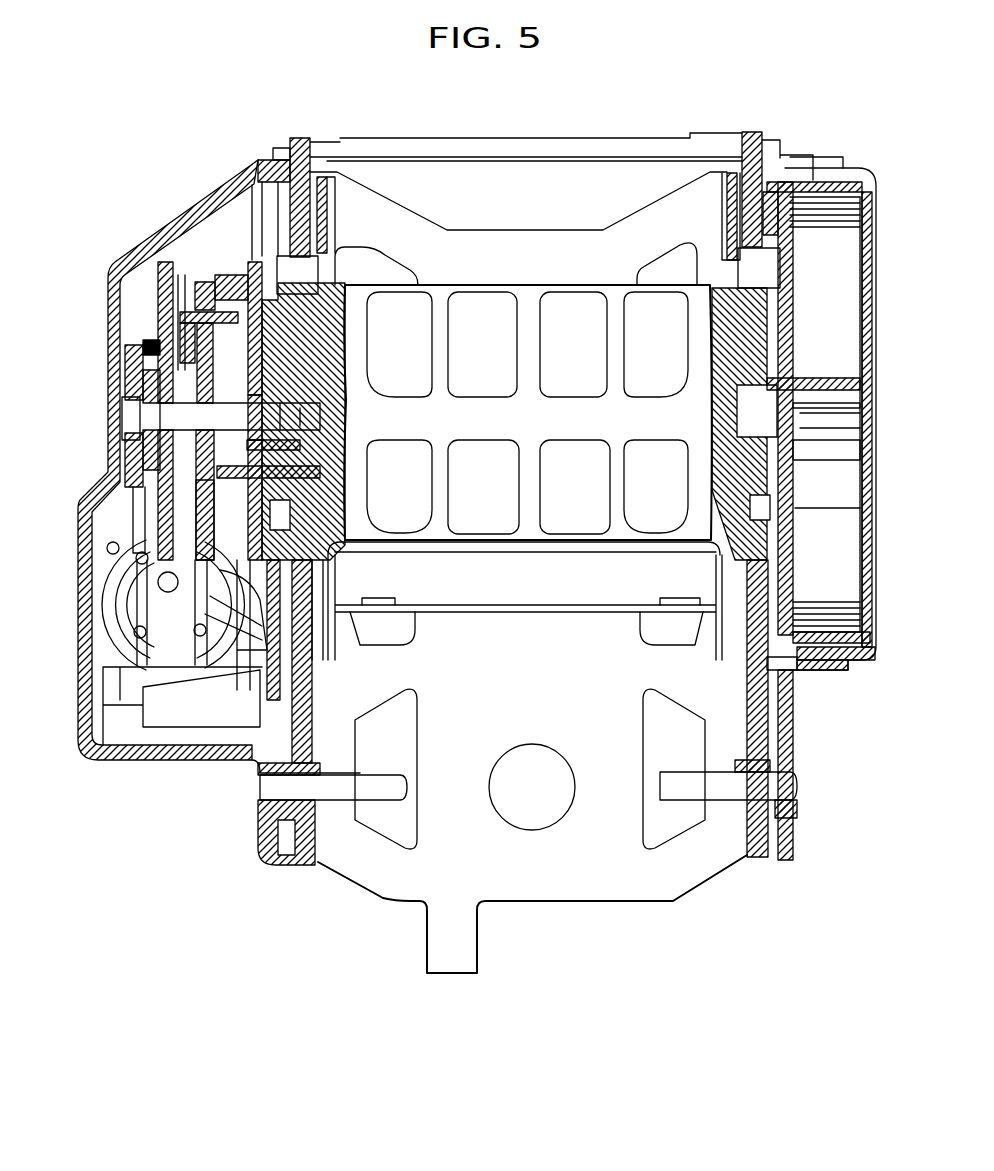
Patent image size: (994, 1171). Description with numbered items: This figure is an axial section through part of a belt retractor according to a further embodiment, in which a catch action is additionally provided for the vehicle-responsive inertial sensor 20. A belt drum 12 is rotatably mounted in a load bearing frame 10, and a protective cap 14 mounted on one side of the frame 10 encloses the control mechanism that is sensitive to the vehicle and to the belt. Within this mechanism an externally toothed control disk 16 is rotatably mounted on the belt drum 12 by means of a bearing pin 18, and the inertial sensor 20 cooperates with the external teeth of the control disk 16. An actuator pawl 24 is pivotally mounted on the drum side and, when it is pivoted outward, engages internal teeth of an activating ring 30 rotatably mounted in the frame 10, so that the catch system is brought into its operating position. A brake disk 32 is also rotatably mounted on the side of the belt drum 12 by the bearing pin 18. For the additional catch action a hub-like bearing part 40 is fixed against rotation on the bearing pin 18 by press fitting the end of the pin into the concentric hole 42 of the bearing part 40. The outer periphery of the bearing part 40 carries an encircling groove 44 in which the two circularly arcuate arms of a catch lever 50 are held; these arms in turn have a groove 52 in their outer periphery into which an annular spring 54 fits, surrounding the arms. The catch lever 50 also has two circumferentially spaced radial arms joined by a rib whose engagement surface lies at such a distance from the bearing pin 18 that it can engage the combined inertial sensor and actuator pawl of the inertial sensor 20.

The load bearing frame 10 is at (302, 848).
The belt drum 12 is at (535, 518).
The protective cap 14 is at (260, 160).
The control disk 16 is at (158, 262).
The bearing pin 18 is at (170, 413).
The inertial sensor 20 is at (165, 624).
The actuator pawl 24 is at (228, 300).
The activating ring 30 is at (241, 585).
The brake disk 32 is at (210, 512).
The bearing part 40 is at (142, 372).
The concentric hole 42 is at (145, 432).
The encircling groove 44 is at (132, 477).
The catch lever 50 is at (128, 506).
The groove 52 is at (137, 350).
The annular spring 54 is at (142, 343).